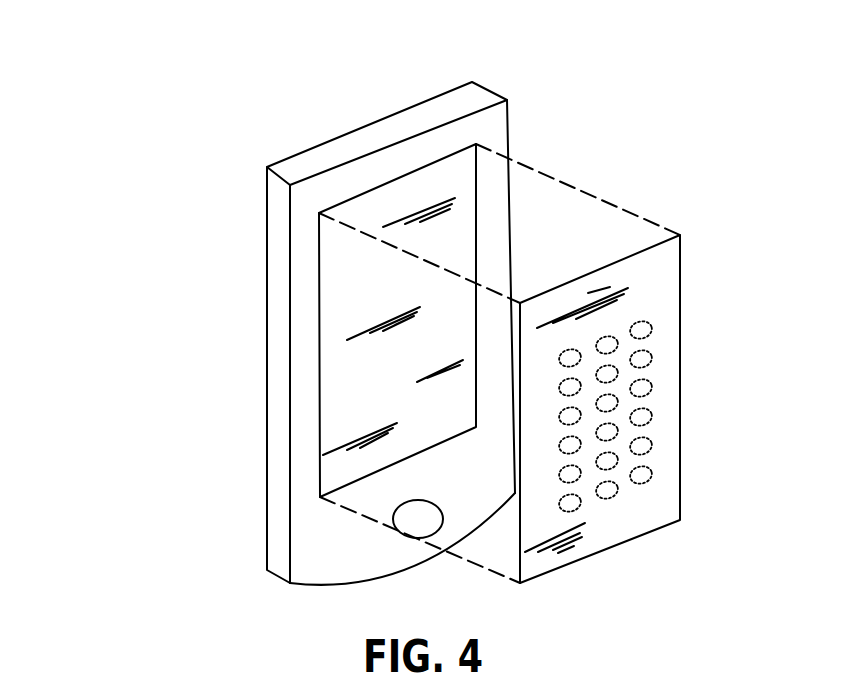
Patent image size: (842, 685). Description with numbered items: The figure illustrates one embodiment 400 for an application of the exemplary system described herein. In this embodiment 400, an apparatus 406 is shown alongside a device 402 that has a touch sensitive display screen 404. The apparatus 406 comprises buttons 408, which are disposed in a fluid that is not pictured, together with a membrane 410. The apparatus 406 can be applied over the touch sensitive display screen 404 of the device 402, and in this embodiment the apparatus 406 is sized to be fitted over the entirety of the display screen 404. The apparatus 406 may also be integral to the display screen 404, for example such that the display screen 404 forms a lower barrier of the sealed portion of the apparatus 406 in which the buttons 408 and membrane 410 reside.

The embodiment 400 is at (160, 79).
The device 402 is at (279, 183).
The touch sensitive display screen 404 is at (342, 274).
The apparatus 406 is at (680, 283).
The buttons 408 is at (650, 380).
The membrane 410 is at (618, 287).